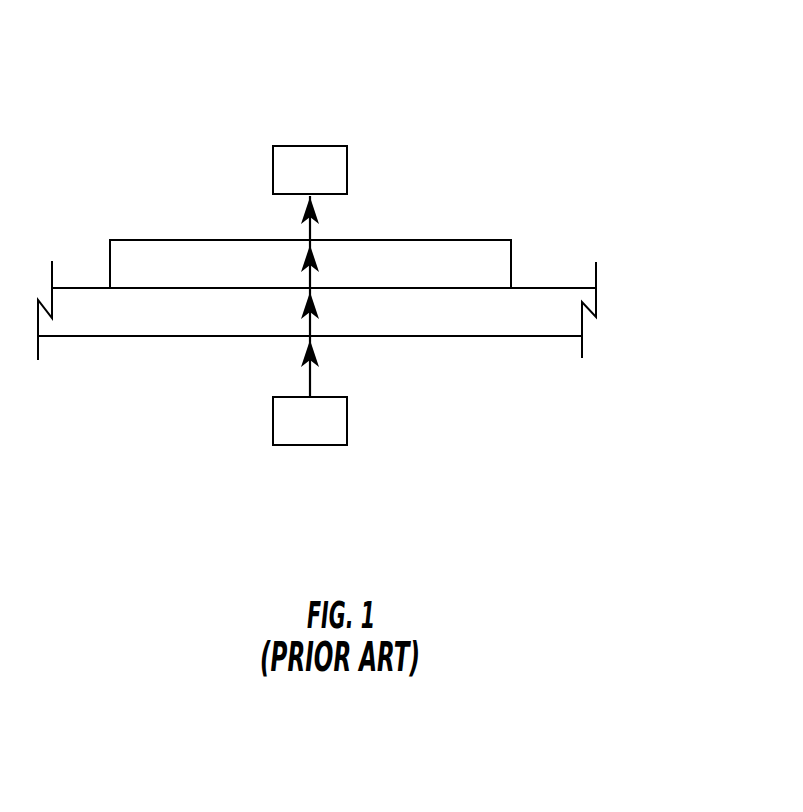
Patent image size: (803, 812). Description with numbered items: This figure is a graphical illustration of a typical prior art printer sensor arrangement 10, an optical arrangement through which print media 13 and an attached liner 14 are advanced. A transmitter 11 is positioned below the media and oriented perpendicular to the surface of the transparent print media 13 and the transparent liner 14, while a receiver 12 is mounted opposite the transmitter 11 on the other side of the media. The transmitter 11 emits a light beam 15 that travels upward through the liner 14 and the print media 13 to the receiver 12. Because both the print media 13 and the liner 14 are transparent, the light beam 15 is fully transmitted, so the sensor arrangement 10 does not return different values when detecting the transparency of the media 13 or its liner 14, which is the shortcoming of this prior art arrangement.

The printer sensor arrangement 10 is at (573, 82).
The transmitter 11 is at (347, 420).
The receiver 12 is at (308, 146).
The print media 13 is at (493, 240).
The liner 14 is at (560, 315).
The light beam 15 is at (303, 343).